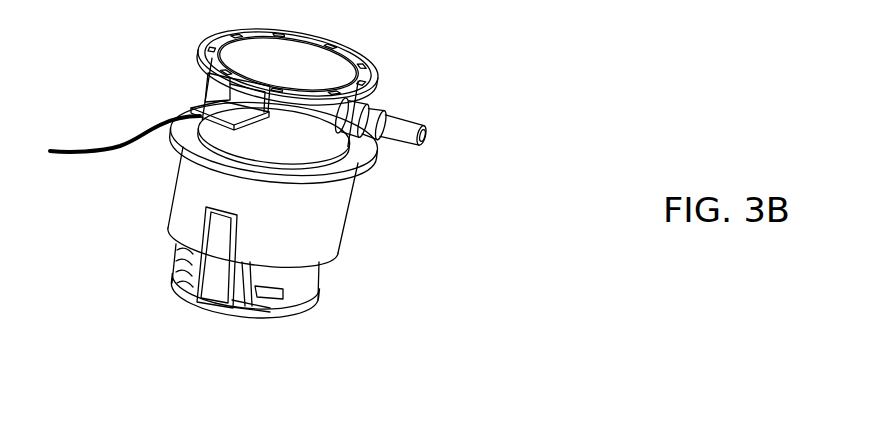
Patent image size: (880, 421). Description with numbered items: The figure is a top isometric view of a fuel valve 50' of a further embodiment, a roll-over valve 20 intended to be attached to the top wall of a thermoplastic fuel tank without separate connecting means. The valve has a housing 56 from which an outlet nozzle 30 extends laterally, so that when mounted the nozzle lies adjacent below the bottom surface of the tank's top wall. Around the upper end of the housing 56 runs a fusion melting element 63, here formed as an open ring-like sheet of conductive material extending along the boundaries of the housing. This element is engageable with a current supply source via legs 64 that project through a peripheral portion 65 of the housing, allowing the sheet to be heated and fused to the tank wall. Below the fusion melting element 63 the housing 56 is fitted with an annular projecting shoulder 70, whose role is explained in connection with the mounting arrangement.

The roll-over valve 20 is at (152, 167).
The outlet nozzle 30 is at (424, 135).
The valve 50' is at (395, 266).
The housing 56 is at (322, 229).
The fusion melting element 63 is at (360, 61).
The legs 64 is at (208, 74).
The peripheral portion 65 is at (378, 83).
The annular projecting shoulder 70 is at (376, 168).